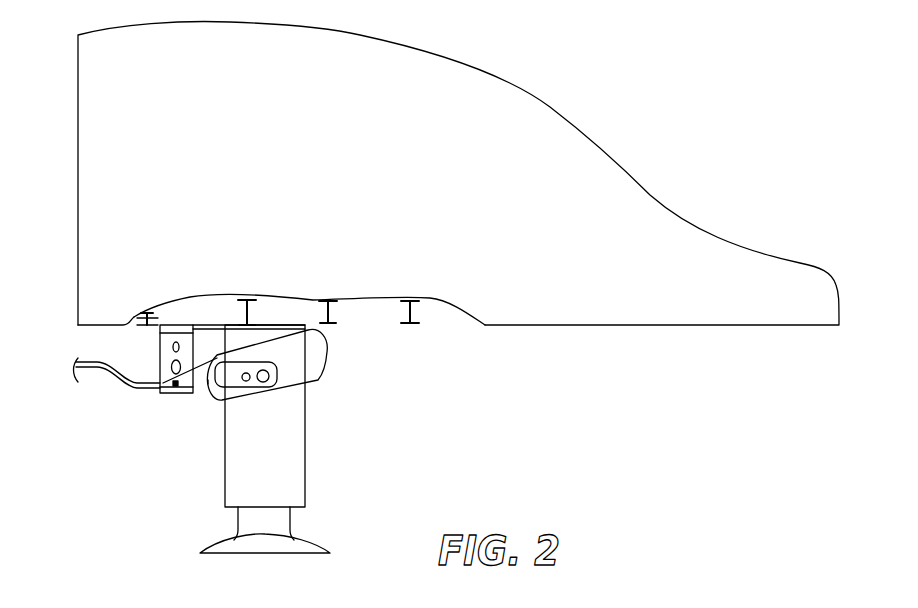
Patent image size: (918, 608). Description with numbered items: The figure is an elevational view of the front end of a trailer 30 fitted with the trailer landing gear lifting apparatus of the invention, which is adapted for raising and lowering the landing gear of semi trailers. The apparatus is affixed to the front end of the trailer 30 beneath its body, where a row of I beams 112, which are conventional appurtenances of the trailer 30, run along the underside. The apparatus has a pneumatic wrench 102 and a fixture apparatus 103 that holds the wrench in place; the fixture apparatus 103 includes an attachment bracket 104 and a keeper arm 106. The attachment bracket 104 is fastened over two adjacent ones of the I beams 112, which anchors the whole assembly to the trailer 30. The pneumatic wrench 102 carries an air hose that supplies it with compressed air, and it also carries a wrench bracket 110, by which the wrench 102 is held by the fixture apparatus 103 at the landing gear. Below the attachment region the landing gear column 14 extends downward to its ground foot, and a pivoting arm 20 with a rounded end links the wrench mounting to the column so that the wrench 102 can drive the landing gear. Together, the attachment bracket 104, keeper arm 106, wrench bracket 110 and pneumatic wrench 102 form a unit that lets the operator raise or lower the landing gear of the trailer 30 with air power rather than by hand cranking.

The trailer 30 is at (332, 171).
The I beams 112 is at (148, 313).
The keeper arm 106 is at (160, 355).
The pedestal column 14 is at (298, 447).
The pivot arm 20 is at (322, 350).
The wrench bracket 110 is at (178, 387).
The pneumatic wrench 102 is at (207, 380).
The attachment bracket 104 is at (147, 327).
The fixture apparatus 103 is at (138, 398).